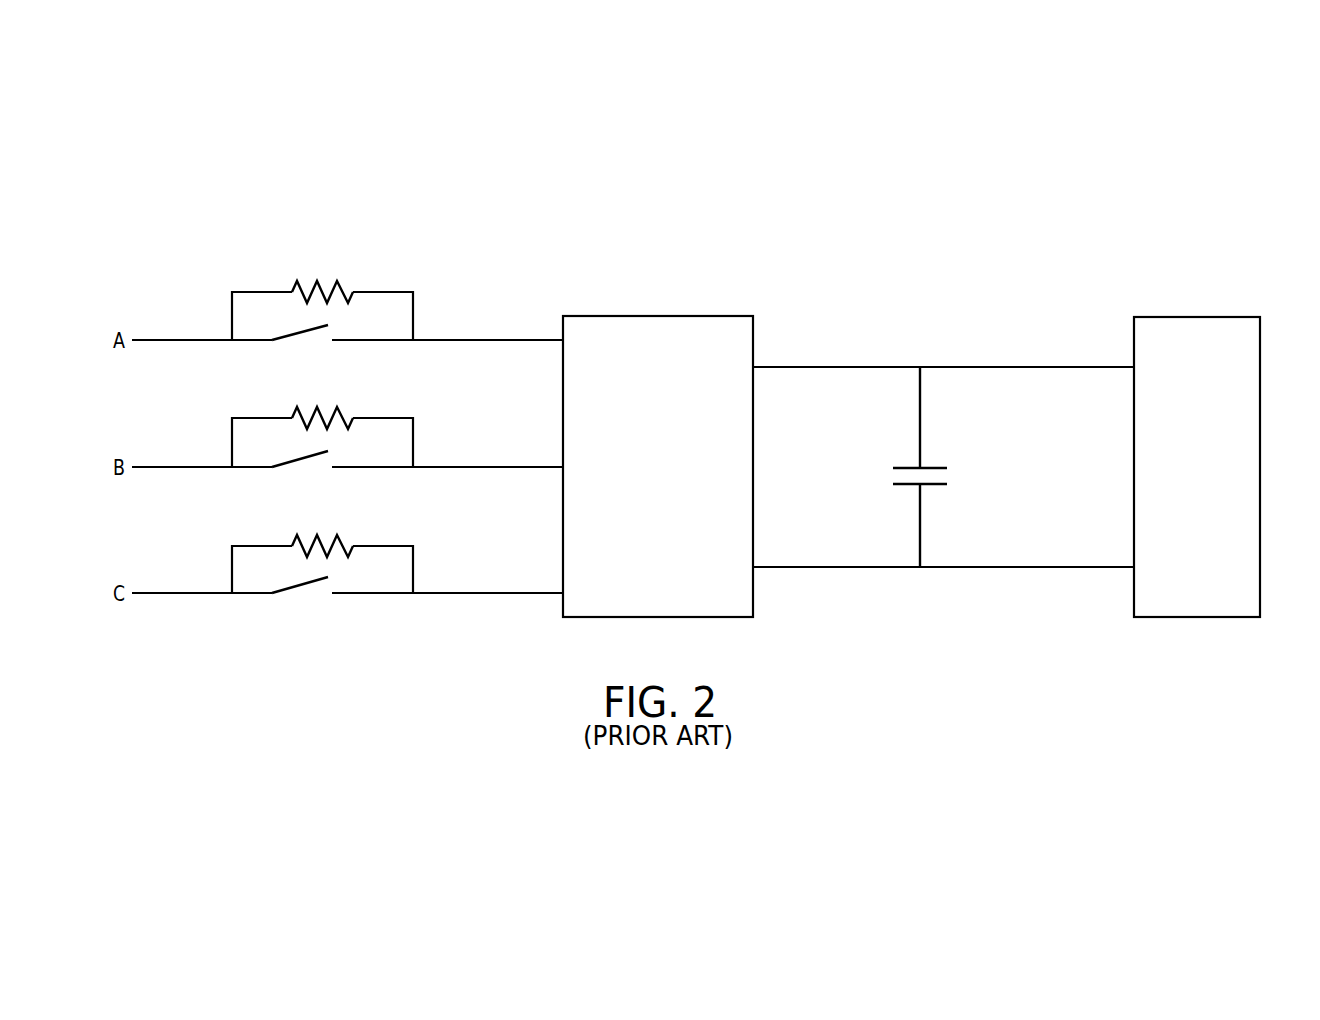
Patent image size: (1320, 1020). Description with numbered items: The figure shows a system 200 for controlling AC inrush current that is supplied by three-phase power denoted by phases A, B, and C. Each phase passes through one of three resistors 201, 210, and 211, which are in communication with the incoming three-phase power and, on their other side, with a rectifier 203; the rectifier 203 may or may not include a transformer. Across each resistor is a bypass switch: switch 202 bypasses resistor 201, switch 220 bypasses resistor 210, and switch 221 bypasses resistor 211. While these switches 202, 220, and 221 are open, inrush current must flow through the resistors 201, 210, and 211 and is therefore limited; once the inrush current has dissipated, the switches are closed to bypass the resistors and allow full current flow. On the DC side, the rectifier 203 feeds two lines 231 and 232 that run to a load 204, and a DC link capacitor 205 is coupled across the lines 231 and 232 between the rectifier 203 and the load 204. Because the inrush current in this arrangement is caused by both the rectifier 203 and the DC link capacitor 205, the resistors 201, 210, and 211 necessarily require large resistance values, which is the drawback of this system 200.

The system 200 is at (1207, 207).
The resistor 201 is at (292, 287).
The bypass switch 202 is at (300, 335).
The rectifier 203 is at (620, 316).
The load 204 is at (1227, 317).
The DC link capacitor 205 is at (938, 468).
The resistor 210 is at (292, 413).
The resistor 211 is at (292, 541).
The bypass switch 220 is at (300, 462).
The bypass switch 221 is at (300, 590).
The line 231 is at (1002, 366).
The line 232 is at (1002, 566).